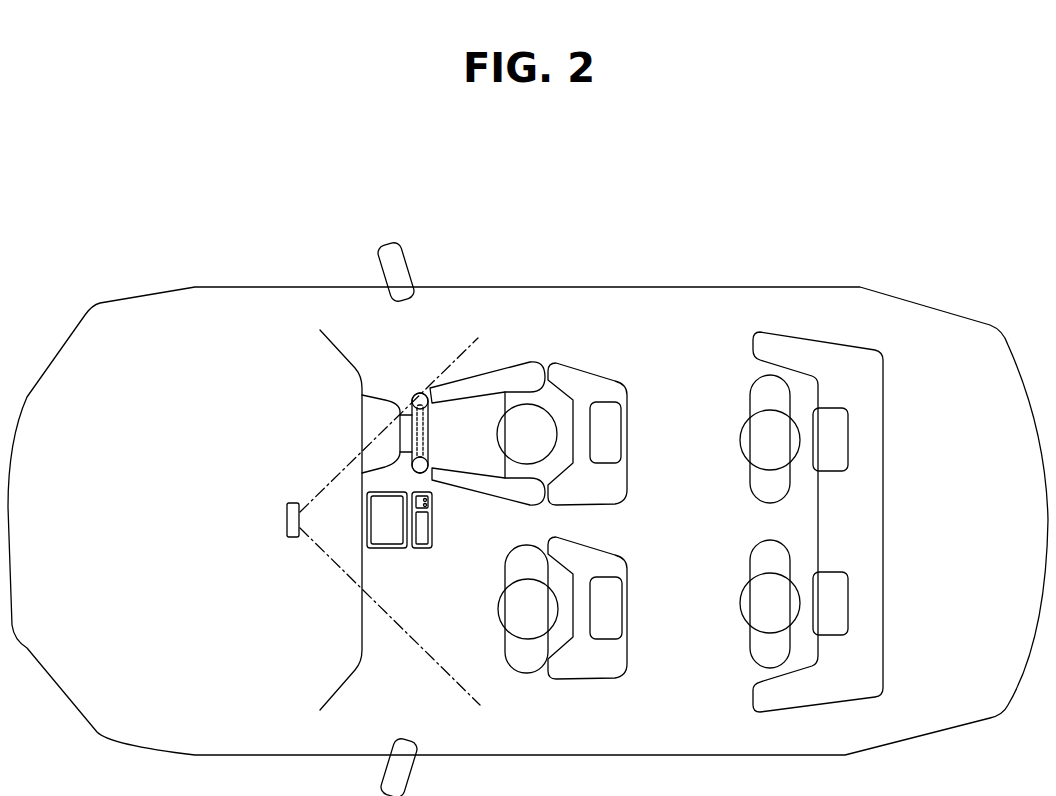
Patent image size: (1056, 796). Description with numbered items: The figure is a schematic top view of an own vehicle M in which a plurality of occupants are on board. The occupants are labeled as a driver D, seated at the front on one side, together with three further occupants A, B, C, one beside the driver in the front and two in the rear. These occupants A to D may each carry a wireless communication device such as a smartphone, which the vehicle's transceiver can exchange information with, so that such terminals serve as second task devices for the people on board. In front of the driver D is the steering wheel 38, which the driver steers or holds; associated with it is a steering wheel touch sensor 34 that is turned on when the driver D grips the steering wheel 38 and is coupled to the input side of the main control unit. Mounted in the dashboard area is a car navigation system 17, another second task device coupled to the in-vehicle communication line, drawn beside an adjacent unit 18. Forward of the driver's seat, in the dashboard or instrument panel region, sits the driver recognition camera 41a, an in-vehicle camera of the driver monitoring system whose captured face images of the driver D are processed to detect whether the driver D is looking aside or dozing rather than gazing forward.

The own vehicle M is at (520, 228).
The driver D is at (526, 362).
The occupant A is at (505, 580).
The occupant B is at (748, 411).
The occupant C is at (748, 575).
The steering wheel 38 is at (432, 418).
The steering wheel touch sensor 34 is at (433, 452).
The car navigation system 17 is at (387, 550).
The operation unit 18 is at (420, 550).
The driver recognition camera 41a is at (287, 521).